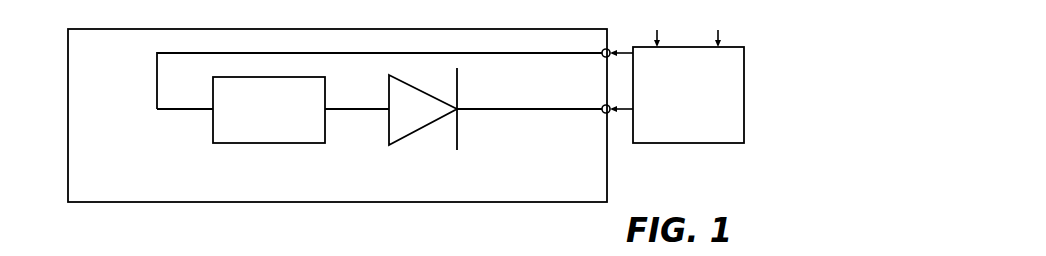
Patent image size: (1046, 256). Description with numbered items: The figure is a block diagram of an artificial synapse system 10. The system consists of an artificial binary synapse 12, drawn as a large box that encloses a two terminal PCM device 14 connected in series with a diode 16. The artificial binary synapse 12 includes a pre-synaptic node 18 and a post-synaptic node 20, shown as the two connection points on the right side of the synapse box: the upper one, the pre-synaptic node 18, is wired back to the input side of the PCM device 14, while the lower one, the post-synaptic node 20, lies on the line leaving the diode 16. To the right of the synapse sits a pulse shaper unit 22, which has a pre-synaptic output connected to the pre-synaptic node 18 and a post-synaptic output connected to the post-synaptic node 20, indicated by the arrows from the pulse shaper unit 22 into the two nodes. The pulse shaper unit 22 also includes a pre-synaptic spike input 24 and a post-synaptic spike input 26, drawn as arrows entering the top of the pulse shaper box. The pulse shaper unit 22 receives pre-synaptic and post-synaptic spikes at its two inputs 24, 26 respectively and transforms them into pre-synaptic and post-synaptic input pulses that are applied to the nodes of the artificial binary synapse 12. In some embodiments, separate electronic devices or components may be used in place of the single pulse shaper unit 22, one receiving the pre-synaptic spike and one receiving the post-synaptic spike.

The artificial synapse system 10 is at (38, 107).
The artificial binary synapse 12 is at (68, 60).
The two terminal PCM device 14 is at (218, 143).
The diode 16 is at (392, 145).
The pre-synaptic node 18 is at (603, 50).
The post-synaptic node 20 is at (603, 106).
The pulse shaper unit 22 is at (744, 95).
The pre-synaptic spike input 24 is at (655, 40).
The post-synaptic spike input 26 is at (721, 42).